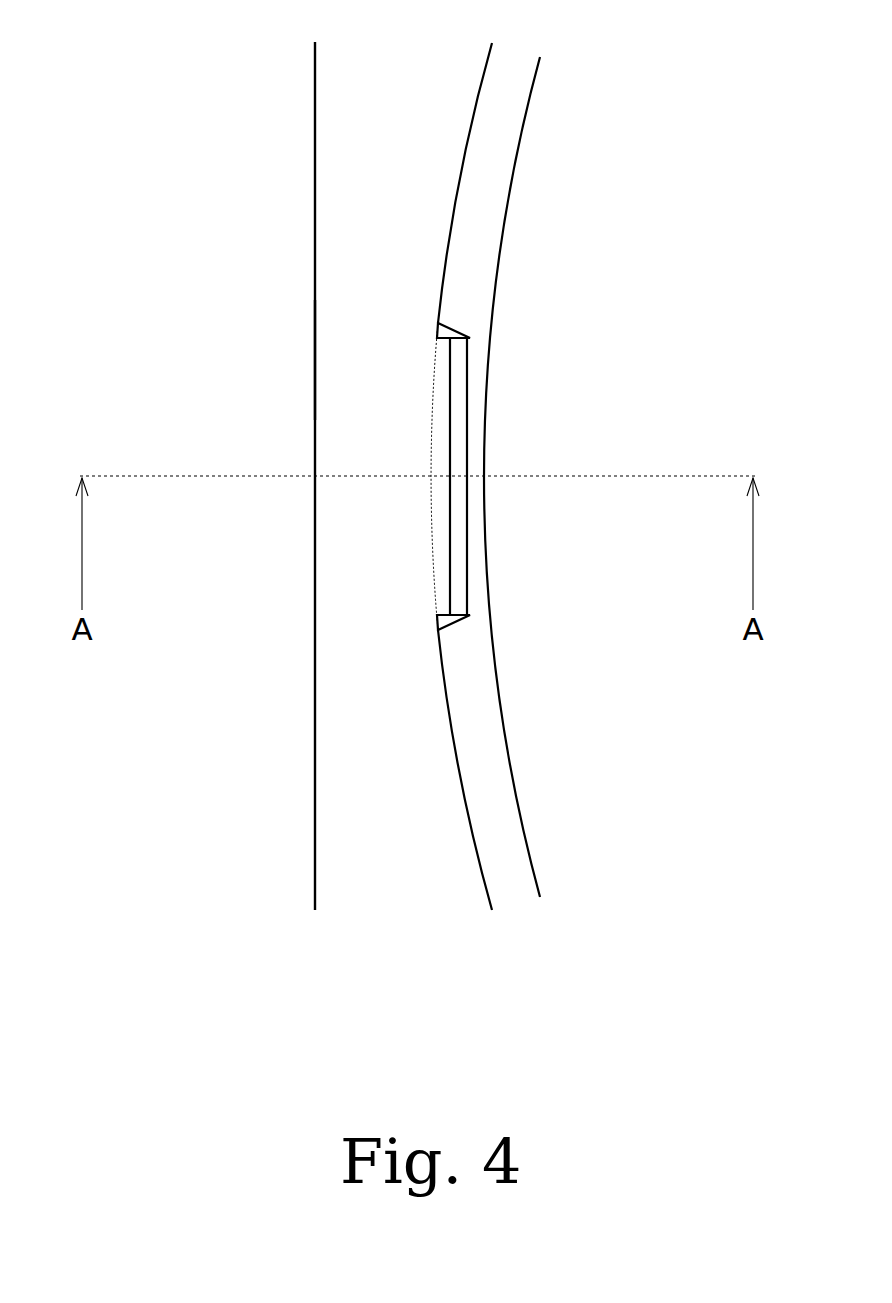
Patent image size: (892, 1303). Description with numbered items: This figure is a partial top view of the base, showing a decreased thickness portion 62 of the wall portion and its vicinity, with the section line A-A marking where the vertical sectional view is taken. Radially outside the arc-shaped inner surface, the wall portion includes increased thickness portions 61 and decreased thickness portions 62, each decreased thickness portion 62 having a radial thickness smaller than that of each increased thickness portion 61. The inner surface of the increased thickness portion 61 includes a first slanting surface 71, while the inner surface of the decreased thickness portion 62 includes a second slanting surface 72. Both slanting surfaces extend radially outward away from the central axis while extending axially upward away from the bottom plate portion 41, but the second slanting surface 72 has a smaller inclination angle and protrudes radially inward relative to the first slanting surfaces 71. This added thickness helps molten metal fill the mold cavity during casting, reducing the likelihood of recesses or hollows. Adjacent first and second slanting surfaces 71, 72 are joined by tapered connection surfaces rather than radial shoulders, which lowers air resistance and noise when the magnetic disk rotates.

The bottom plate portion 41 is at (672, 827).
The increased thickness portion 61 is at (400, 90).
The decreased thickness portion 62 is at (380, 400).
The first slanting surface 71 is at (493, 170).
The second slanting surface 72 is at (455, 428).